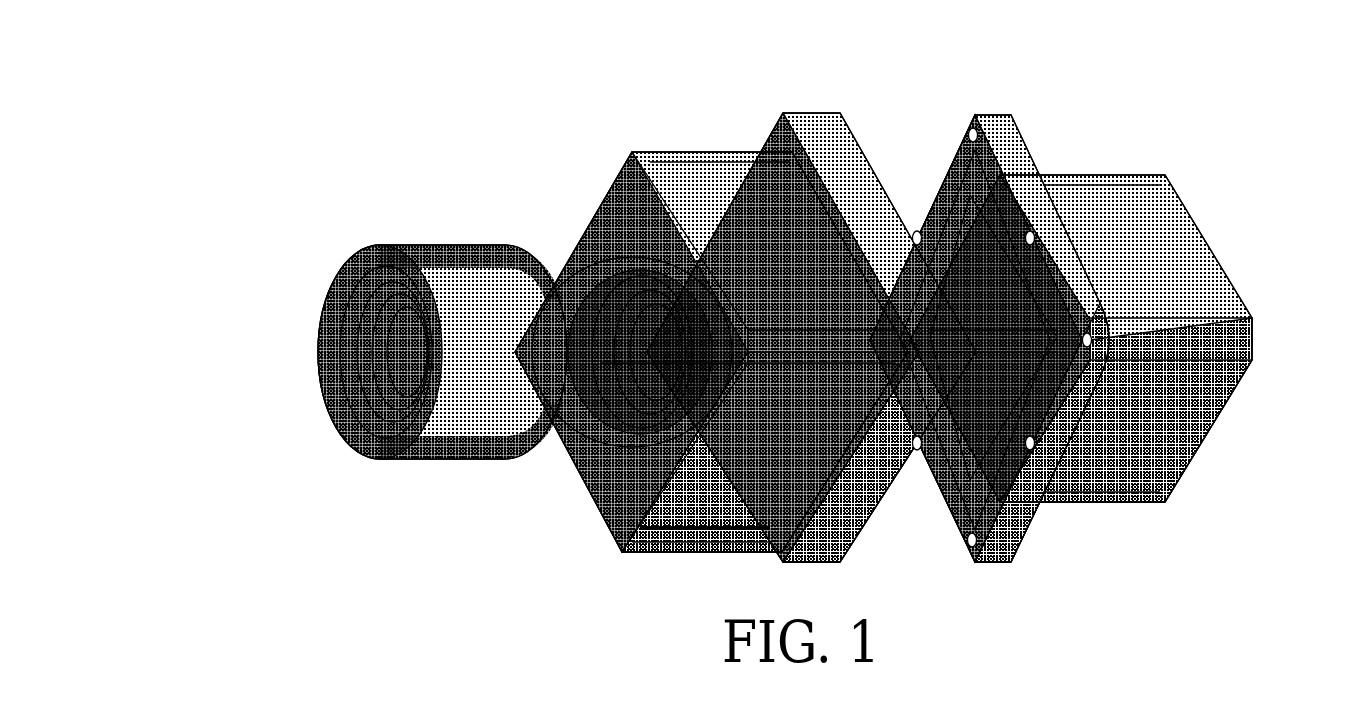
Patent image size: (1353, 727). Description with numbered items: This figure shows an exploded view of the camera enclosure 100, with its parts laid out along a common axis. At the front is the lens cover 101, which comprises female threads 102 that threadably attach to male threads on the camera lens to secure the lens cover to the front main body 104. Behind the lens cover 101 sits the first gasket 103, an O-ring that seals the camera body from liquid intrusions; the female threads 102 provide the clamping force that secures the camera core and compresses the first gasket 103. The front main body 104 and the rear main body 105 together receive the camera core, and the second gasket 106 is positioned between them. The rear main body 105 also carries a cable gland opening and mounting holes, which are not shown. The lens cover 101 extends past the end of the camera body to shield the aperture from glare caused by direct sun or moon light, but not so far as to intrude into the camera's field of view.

The camera enclosure 100 is at (318, 176).
The lens cover 101 is at (390, 389).
The female threads 102 is at (357, 352).
The first gasket 103 is at (577, 256).
The front main body 104 is at (693, 148).
The rear main body 105 is at (1121, 168).
The second gasket 106 is at (1068, 300).